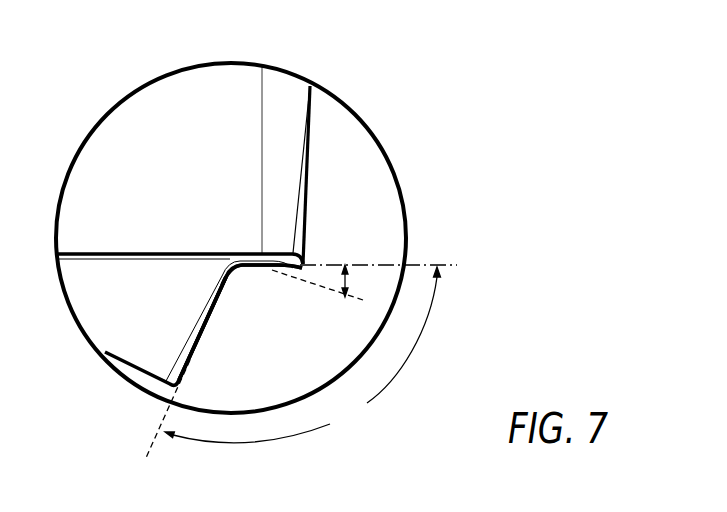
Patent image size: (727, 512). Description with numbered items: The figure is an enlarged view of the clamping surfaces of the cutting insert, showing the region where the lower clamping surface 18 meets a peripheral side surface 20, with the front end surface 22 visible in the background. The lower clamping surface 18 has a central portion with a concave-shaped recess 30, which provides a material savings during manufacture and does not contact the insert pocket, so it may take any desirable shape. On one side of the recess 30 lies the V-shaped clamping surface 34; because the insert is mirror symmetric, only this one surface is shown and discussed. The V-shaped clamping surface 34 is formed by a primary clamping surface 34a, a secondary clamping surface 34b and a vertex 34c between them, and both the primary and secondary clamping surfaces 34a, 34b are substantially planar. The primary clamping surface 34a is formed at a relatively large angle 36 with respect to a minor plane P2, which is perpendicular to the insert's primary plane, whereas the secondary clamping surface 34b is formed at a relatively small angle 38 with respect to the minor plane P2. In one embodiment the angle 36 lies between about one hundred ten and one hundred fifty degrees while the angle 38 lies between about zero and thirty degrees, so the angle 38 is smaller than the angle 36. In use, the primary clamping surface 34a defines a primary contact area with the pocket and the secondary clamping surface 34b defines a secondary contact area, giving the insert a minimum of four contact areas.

The lower clamping surface 18 is at (154, 387).
The peripheral side surfaces 20 is at (322, 122).
The front end surface 22 is at (181, 184).
The concave-shaped recess 30 is at (128, 378).
The V-shaped clamping surface 34 is at (261, 298).
The primary clamping surface 34a is at (197, 355).
The secondary clamping surface 34b is at (275, 272).
The vertex 34c is at (243, 266).
The angle 36 is at (293, 363).
The angle 38 is at (349, 280).
The minor plane P2 is at (443, 264).